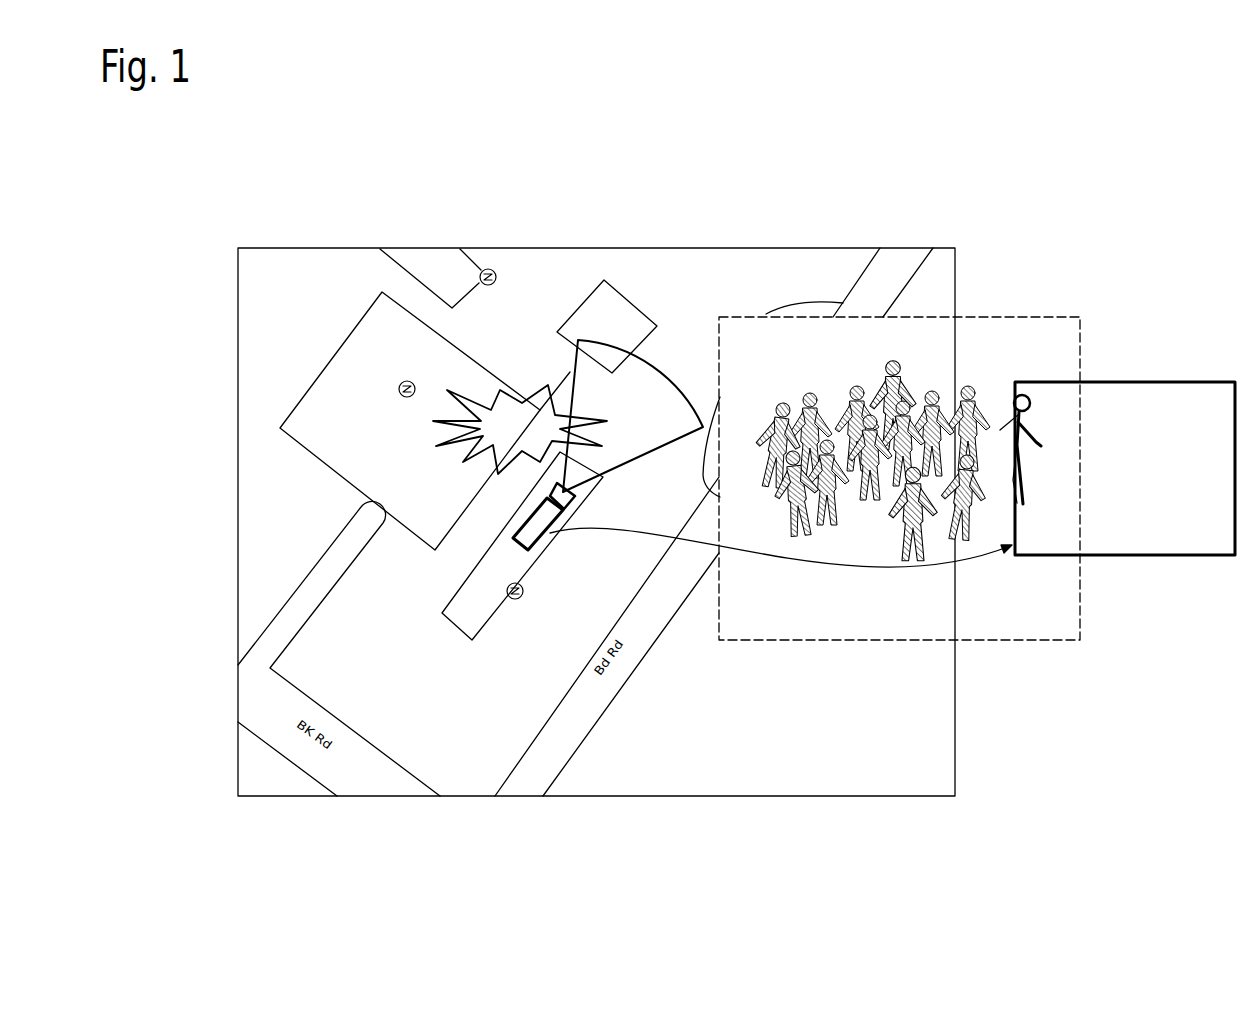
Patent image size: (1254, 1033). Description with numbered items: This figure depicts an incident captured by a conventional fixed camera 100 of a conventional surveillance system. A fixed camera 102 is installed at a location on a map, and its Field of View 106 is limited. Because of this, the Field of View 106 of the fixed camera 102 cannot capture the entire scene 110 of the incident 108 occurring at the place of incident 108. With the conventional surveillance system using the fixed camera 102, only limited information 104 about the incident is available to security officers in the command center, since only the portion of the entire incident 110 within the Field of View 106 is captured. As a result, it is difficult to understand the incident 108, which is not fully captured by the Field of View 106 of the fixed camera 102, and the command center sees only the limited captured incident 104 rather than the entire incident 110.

The incident captured by conventional fixed camera 100 is at (1157, 230).
The fixed camera 102 is at (523, 537).
The incident captured by fixed camera 104 is at (1183, 381).
The field of view of fixed camera 106 is at (664, 372).
The place of incident 108 is at (492, 390).
The entire incident 110 is at (1030, 313).